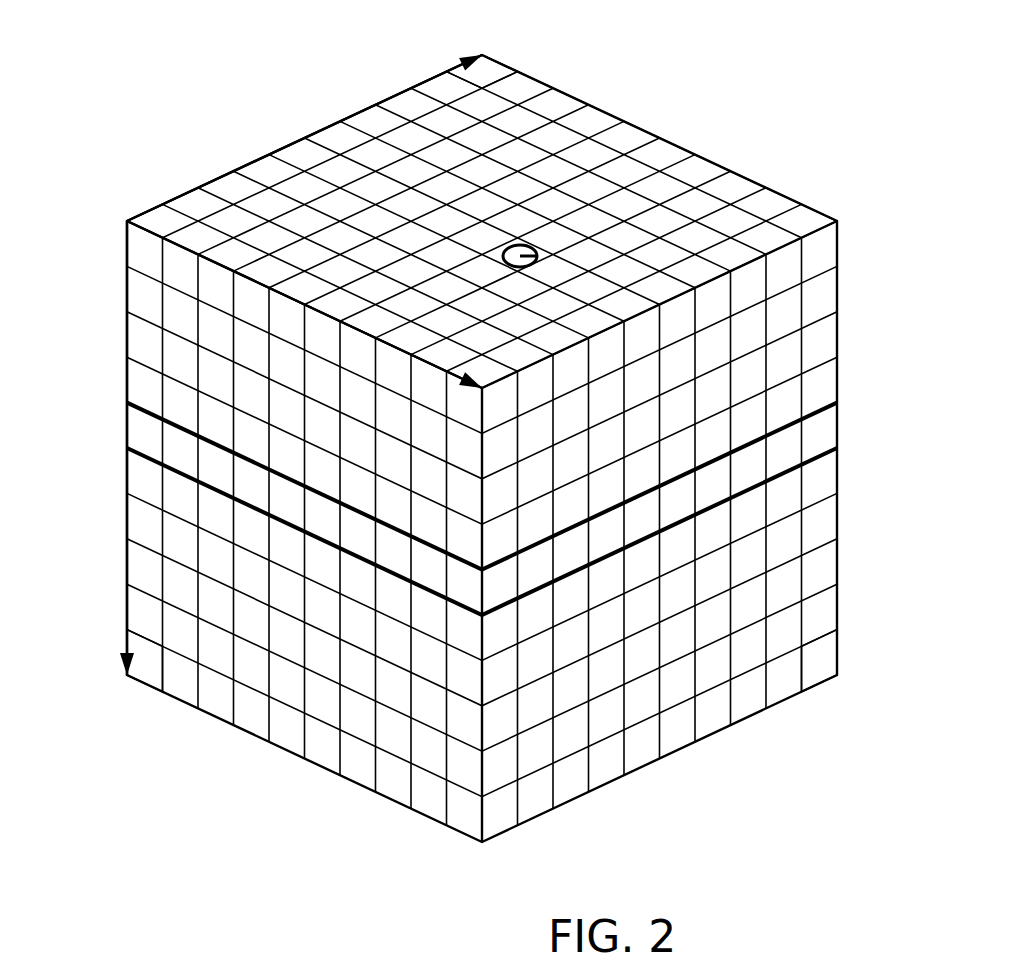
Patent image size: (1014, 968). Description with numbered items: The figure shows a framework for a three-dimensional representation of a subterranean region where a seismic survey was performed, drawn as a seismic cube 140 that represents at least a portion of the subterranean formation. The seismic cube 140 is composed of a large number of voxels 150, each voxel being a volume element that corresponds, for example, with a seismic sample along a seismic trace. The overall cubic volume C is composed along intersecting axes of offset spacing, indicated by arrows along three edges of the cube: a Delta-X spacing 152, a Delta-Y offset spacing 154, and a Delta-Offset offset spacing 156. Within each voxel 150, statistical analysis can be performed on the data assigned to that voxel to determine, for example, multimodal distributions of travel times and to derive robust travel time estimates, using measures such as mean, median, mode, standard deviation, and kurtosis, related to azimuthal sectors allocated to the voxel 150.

The seismic cube 140 is at (773, 124).
The voxel 150 is at (520, 85).
The Delta-X spacing 152 is at (162, 236).
The Delta-Y offset spacing 154 is at (318, 130).
The Delta-Offset offset spacing 156 is at (125, 480).
The cubic volume C is at (673, 773).